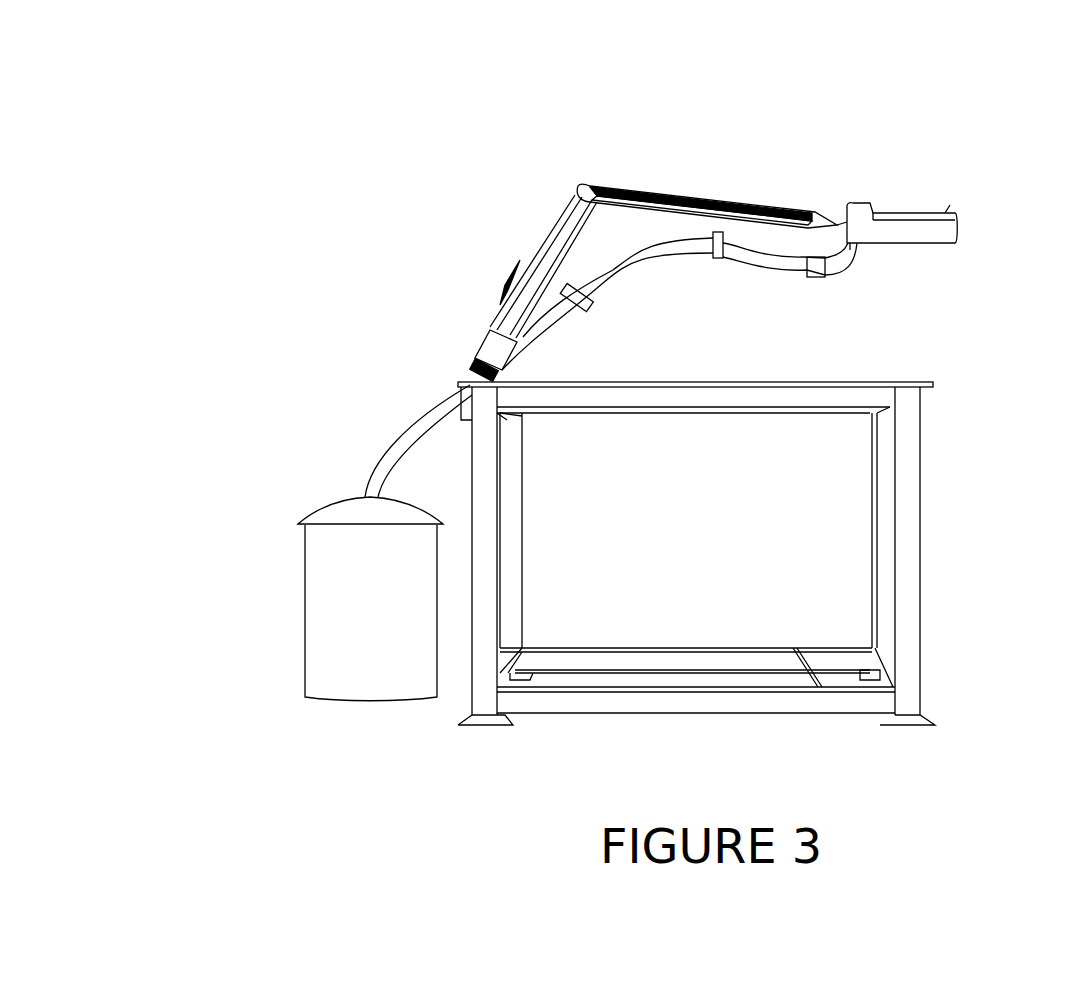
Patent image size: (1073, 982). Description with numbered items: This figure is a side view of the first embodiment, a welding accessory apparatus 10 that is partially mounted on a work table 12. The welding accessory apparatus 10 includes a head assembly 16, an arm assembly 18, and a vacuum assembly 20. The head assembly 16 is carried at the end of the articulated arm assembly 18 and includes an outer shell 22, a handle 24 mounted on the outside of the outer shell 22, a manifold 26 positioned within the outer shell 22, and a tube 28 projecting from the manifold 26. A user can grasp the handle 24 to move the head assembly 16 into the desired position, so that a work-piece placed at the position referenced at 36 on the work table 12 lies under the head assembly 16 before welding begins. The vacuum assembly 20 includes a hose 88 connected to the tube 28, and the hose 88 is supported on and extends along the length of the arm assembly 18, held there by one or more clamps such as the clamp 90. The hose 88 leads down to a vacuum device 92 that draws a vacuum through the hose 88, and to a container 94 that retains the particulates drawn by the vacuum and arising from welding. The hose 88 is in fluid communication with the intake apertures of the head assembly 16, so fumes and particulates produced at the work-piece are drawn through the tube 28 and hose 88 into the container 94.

The welding accessory apparatus 10 is at (405, 228).
The work table 12 is at (773, 405).
The head assembly 16 is at (887, 160).
The arm assembly 18 is at (610, 170).
The vacuum assembly 20 is at (355, 705).
The outer shell 22 is at (958, 222).
The handle 24 is at (946, 195).
The manifold 26 is at (905, 253).
The tube 28 is at (825, 270).
The work-piece position 36 is at (900, 322).
The hose 88 is at (755, 265).
The clamp 90 is at (716, 262).
The vacuum device 92 is at (345, 485).
The container 94 is at (310, 561).